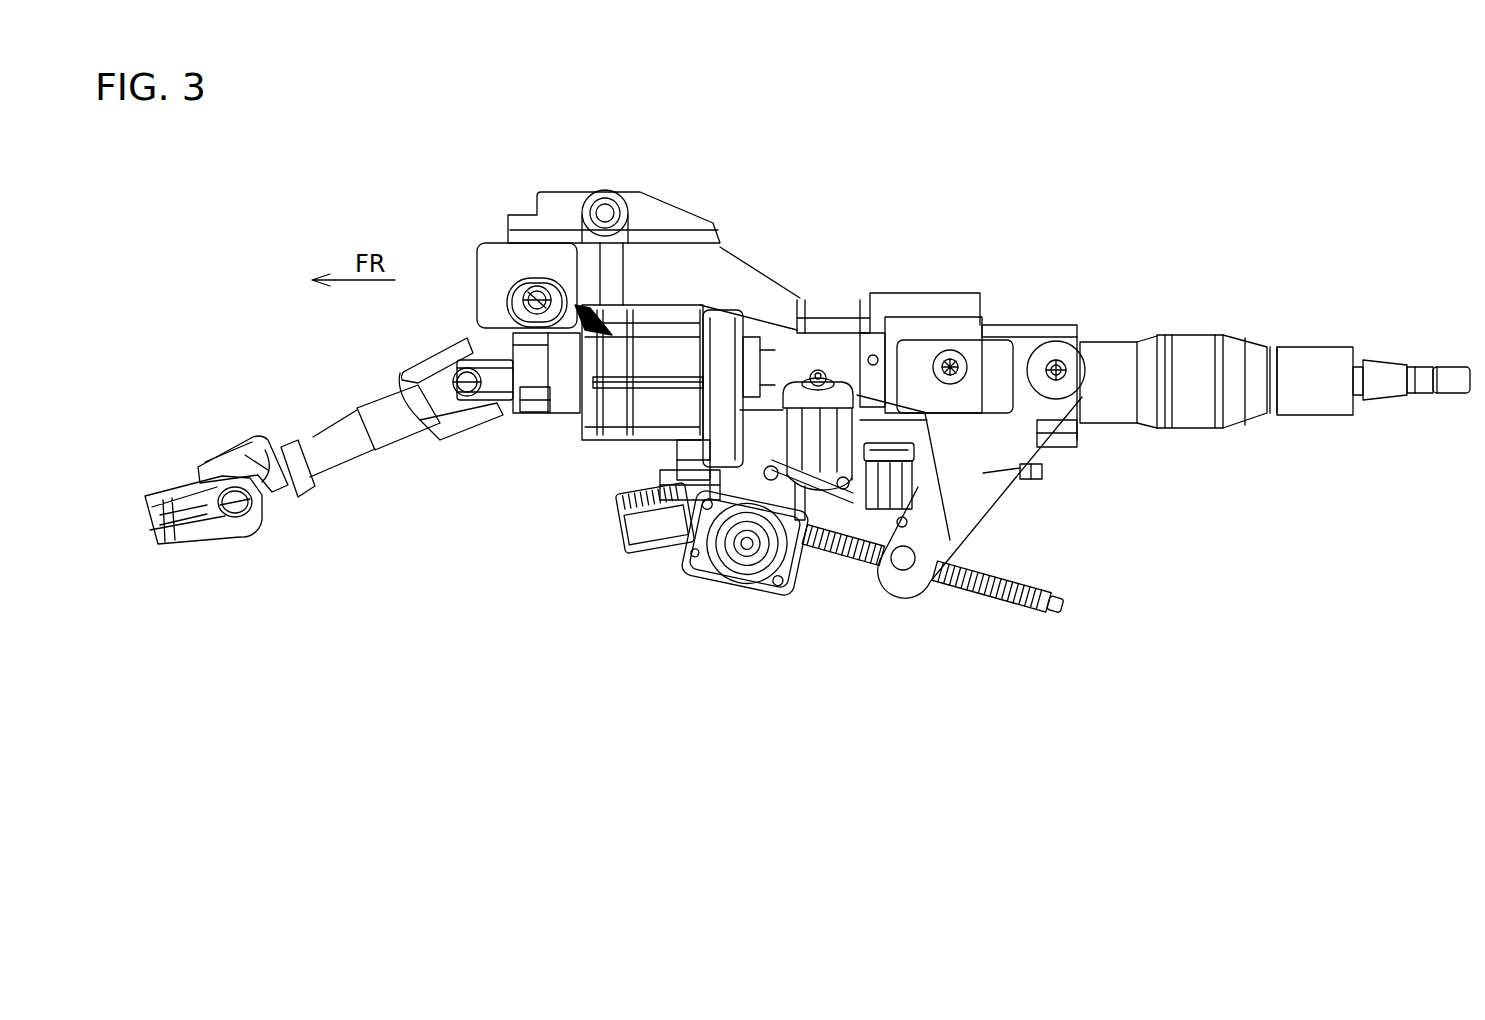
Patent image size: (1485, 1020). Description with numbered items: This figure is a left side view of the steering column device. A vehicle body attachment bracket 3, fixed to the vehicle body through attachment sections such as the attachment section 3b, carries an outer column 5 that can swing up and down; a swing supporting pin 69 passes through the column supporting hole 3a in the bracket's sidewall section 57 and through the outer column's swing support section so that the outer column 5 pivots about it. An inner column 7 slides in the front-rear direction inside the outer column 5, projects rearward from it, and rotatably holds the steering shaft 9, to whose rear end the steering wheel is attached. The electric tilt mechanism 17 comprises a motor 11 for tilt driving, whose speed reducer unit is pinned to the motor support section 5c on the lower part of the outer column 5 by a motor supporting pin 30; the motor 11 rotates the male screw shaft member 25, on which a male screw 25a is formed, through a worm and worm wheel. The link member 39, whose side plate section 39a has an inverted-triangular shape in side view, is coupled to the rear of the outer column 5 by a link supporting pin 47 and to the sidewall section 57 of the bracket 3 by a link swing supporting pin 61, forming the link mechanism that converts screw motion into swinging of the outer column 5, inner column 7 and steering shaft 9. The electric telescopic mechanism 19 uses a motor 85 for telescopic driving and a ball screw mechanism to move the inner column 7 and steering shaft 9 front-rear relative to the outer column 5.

The vehicle body attachment bracket 3 is at (838, 303).
The column supporting hole 3a is at (527, 294).
The attachment section 3b is at (930, 316).
The outer column 5 is at (998, 325).
The motor support section 5c is at (683, 467).
The inner column 7 is at (1253, 357).
The steering shaft 9 is at (1383, 375).
The motor for tilt driving 11 is at (738, 578).
The electric tilt mechanism 17 is at (743, 567).
The electric telescopic mechanism 19 is at (819, 366).
The male screw shaft member 25 is at (939, 608).
The male screw 25a is at (958, 585).
The motor supporting pin 30 is at (688, 490).
The link member 39 is at (988, 529).
The side plate section 39a is at (990, 468).
The link supporting pin 47 is at (1060, 360).
The sidewall section 57 is at (1059, 400).
The link swing supporting pin 61 is at (950, 355).
The swing supporting pin 69 is at (541, 297).
The motor for telescopic driving 85 is at (843, 355).